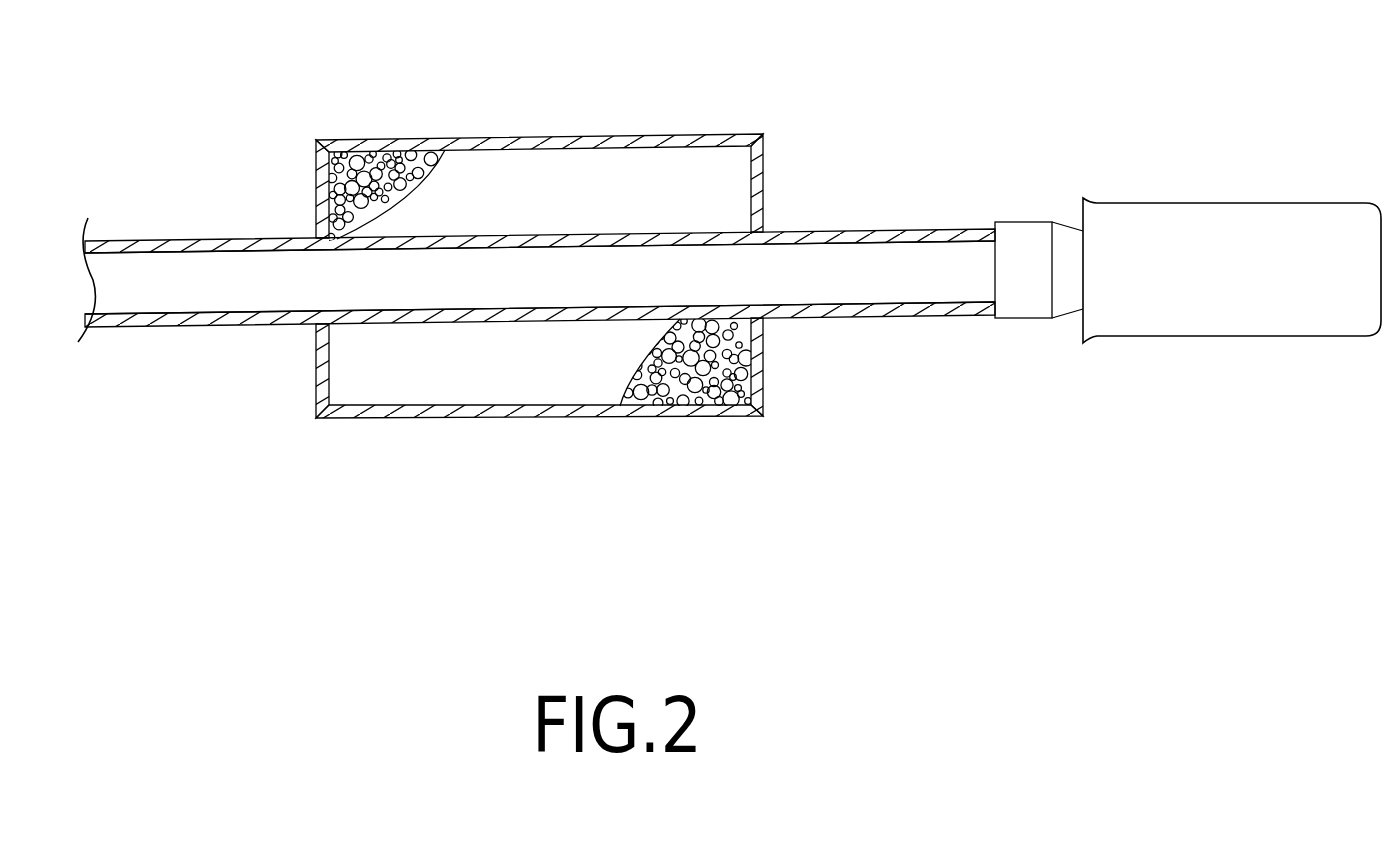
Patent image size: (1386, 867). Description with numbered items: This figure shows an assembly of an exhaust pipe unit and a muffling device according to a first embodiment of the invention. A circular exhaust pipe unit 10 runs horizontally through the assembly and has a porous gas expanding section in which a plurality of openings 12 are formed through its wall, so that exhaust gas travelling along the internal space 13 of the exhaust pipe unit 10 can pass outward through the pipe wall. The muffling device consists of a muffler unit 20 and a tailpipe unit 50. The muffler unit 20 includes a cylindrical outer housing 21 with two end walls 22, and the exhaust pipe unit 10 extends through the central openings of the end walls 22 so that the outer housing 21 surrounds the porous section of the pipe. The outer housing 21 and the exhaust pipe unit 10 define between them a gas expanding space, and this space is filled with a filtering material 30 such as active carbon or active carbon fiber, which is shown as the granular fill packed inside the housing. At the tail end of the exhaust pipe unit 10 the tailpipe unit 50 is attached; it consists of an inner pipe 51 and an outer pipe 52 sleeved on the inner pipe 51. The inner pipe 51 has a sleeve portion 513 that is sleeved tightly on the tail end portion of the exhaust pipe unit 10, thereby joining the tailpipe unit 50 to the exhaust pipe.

The exhaust pipe unit 10 is at (536, 370).
The openings 12 is at (370, 322).
The internal space 13 is at (155, 262).
The muffler unit 20 is at (541, 271).
The outer housing 21 is at (628, 140).
The end walls 22 is at (315, 188).
The filtering material 30 is at (698, 362).
The tailpipe unit 50 is at (1188, 238).
The inner pipe 51 is at (1039, 270).
The outer pipe 52 is at (1182, 196).
The sleeve portion 513 is at (1020, 305).